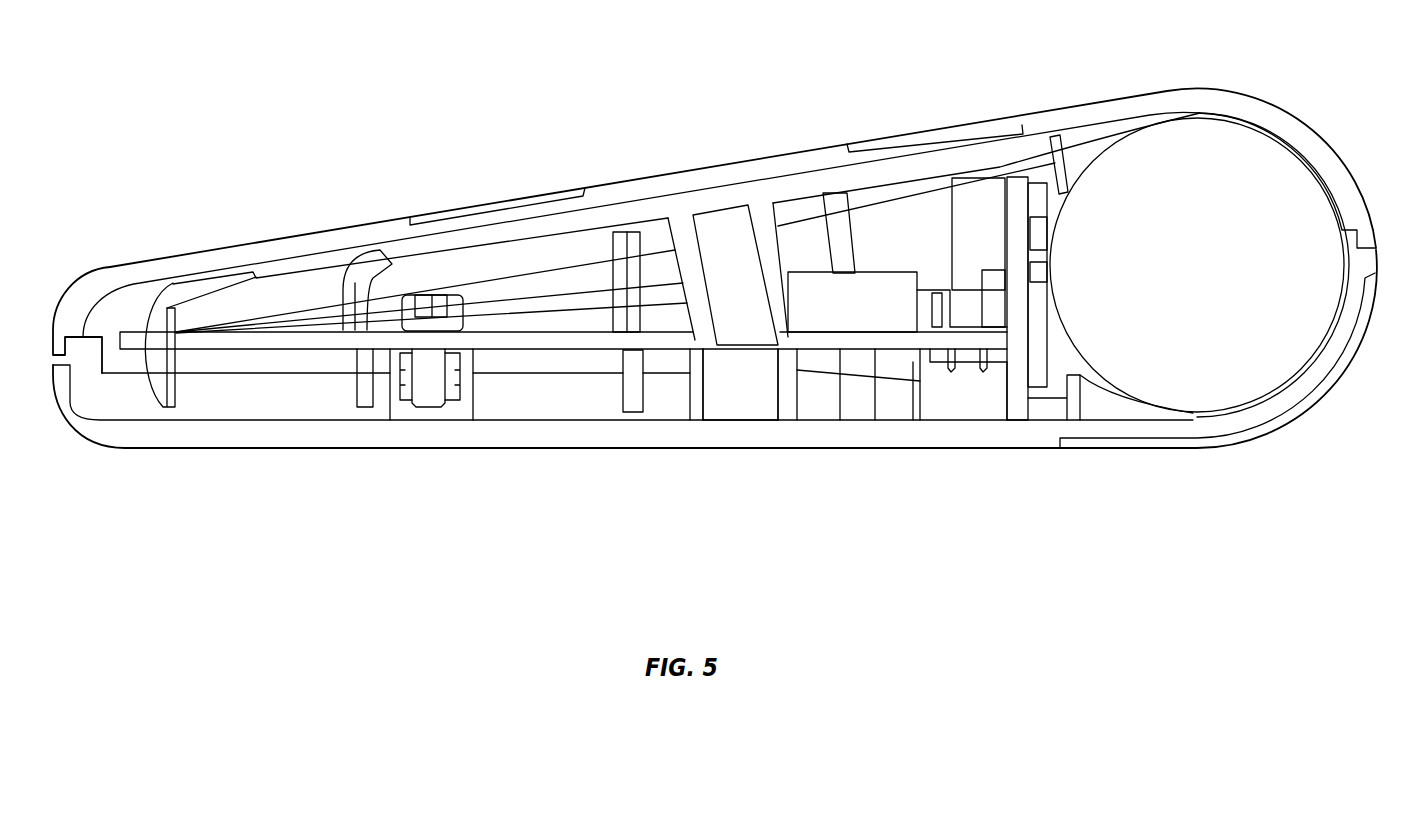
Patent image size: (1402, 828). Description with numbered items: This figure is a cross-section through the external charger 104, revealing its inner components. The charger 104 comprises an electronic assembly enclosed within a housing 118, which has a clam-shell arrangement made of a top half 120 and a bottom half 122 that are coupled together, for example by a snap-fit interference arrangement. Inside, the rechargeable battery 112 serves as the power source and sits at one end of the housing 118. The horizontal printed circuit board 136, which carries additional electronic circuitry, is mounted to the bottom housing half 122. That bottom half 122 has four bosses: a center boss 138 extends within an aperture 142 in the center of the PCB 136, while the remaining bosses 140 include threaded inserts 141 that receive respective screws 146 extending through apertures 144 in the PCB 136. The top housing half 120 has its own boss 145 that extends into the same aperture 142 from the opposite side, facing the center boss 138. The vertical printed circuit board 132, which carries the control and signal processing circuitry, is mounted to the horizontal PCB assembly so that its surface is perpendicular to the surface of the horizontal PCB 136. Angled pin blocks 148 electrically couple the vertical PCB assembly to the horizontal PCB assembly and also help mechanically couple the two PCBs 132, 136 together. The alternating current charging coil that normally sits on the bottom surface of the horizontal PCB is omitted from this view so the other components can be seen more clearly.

The charger 104 is at (674, 143).
The rechargeable battery 112 is at (1232, 140).
The housing 118 is at (715, 286).
The top half 120 is at (291, 237).
The bottom half 122 is at (598, 443).
The printed circuit board 132 is at (1017, 395).
The printed circuit board 136 is at (137, 337).
The center boss 138 is at (695, 397).
The boss 140 is at (395, 392).
The threaded insert 141 is at (462, 383).
The aperture 142 is at (795, 337).
The aperture 144 is at (400, 342).
The boss 145 is at (681, 225).
The screw 146 is at (453, 305).
The angled pin block 148 is at (946, 290).